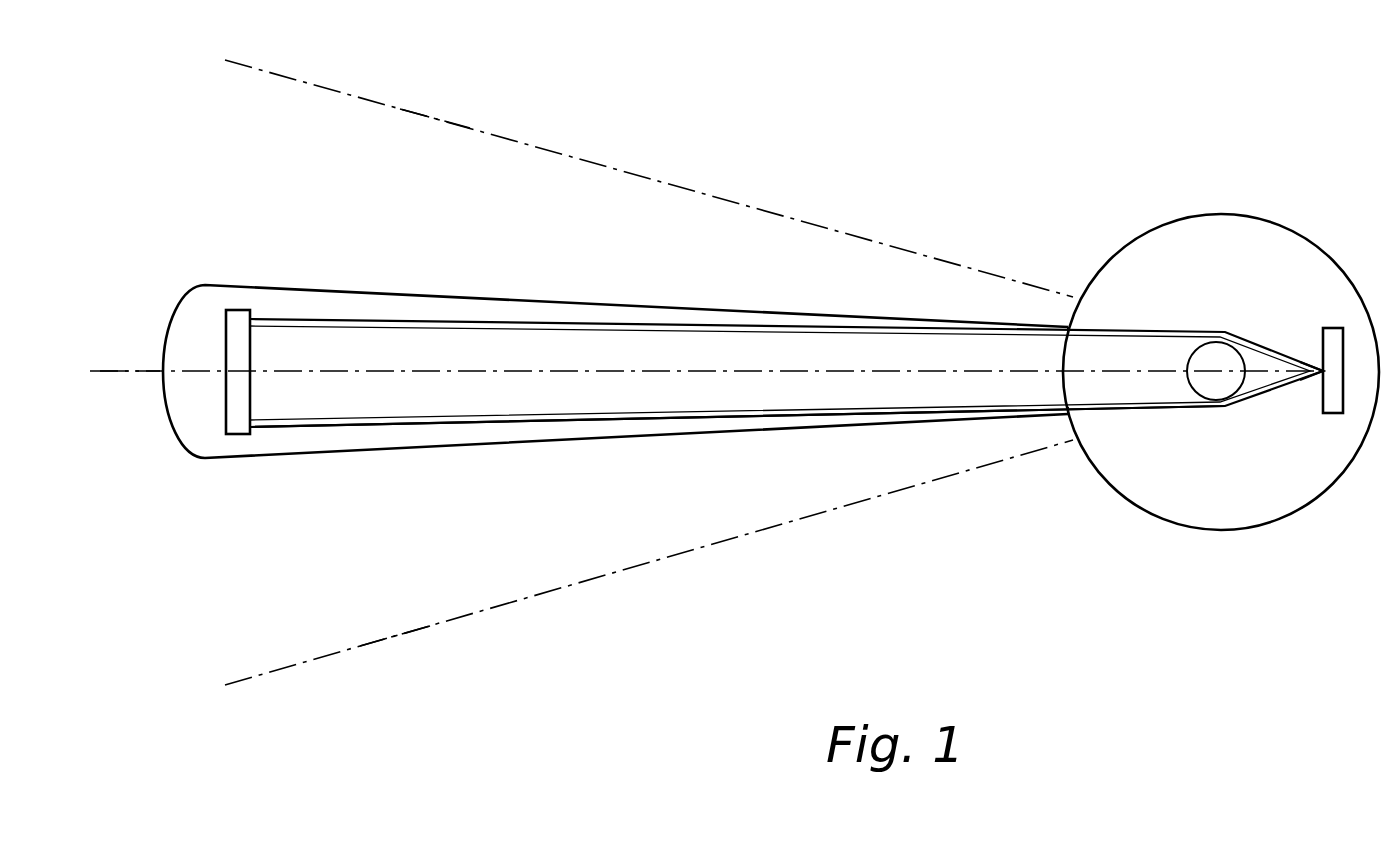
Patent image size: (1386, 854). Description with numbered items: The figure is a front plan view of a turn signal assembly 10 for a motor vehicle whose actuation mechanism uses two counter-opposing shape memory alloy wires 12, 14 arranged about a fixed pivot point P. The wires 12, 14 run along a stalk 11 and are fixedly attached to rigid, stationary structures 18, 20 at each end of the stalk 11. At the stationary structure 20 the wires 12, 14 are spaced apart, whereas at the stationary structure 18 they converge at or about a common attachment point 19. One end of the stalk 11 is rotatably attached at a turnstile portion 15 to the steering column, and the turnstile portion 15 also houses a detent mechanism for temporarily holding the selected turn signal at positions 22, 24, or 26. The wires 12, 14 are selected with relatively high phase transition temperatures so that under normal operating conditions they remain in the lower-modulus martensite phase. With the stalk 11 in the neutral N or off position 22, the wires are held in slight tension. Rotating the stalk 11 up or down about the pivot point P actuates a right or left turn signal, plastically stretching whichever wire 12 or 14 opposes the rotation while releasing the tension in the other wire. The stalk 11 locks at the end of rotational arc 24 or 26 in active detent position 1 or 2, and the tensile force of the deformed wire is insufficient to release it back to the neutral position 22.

The detent position 1 is at (636, 172).
The detent position 2 is at (637, 570).
The neutral position N is at (693, 372).
The pivot point P is at (1215, 355).
The turn signal assembly 10 is at (960, 99).
The stalk 11 is at (300, 288).
The shape memory alloy wire 12 is at (586, 327).
The shape memory alloy wire 14 is at (484, 422).
The turnstile portion 15 is at (1282, 226).
The stationary structure 18 is at (1336, 396).
The common attachment point 19 is at (1320, 369).
The stationary structure 20 is at (226, 405).
The neutral position 22 is at (132, 371).
The rotational arc 24 is at (392, 637).
The rotational arc 26 is at (432, 117).